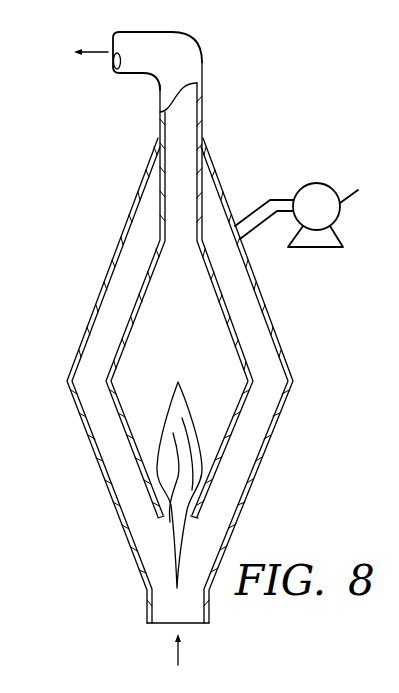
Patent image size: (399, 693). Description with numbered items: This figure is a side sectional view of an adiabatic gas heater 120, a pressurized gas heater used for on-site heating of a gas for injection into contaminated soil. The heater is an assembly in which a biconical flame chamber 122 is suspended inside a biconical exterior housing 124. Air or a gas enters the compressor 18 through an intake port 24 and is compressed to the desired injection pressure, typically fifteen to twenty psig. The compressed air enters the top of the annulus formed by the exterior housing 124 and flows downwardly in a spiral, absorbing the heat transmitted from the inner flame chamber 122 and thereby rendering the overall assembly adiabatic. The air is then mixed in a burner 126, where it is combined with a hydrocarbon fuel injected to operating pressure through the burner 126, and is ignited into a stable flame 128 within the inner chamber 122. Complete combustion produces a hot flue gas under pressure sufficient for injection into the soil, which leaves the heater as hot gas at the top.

The adiabatic gas heater 120 is at (112, 165).
The biconical flame chamber 122 is at (141, 303).
The biconical exterior housing 124 is at (97, 304).
The burner 126 is at (150, 640).
The stable flame 128 is at (170, 414).
The compressor 18 is at (318, 183).
The intake port 24 is at (347, 219).